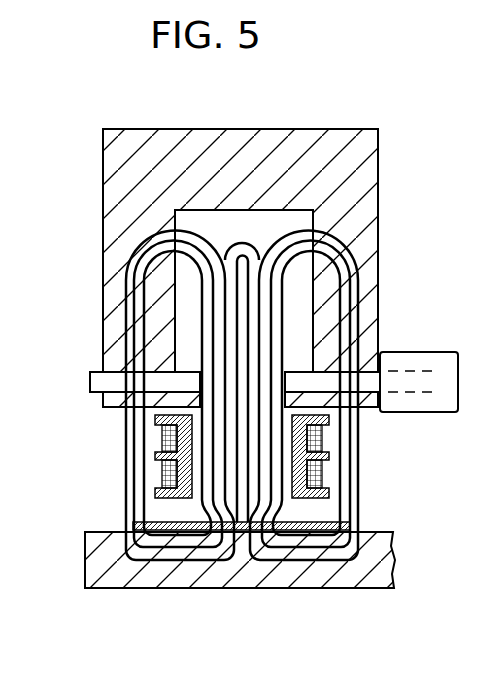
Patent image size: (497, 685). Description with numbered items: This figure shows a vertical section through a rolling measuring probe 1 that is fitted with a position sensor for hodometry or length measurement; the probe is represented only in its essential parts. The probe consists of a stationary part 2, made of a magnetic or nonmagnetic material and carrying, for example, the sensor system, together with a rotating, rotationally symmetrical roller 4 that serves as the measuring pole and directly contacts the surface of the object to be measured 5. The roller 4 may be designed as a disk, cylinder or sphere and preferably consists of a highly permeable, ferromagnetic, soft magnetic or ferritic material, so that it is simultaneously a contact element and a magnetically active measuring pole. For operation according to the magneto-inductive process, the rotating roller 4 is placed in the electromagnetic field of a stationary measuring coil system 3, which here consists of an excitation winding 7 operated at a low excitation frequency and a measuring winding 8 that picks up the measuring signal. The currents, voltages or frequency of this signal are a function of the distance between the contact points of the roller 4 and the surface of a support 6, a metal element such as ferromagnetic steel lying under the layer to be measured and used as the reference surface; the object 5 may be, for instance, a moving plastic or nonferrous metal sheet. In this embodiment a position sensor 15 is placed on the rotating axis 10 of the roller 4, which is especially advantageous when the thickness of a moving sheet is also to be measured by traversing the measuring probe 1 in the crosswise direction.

The measuring probe 1 is at (360, 115).
The stationary part 2 is at (380, 158).
The measuring coil system 3 is at (141, 457).
The roller 4 is at (283, 302).
The object to be measured 5 is at (352, 520).
The support 6 is at (394, 572).
The excitation winding 7 is at (162, 436).
The measuring winding 8 is at (162, 473).
The rotating axis 10 is at (90, 371).
The position sensor 15 is at (430, 351).